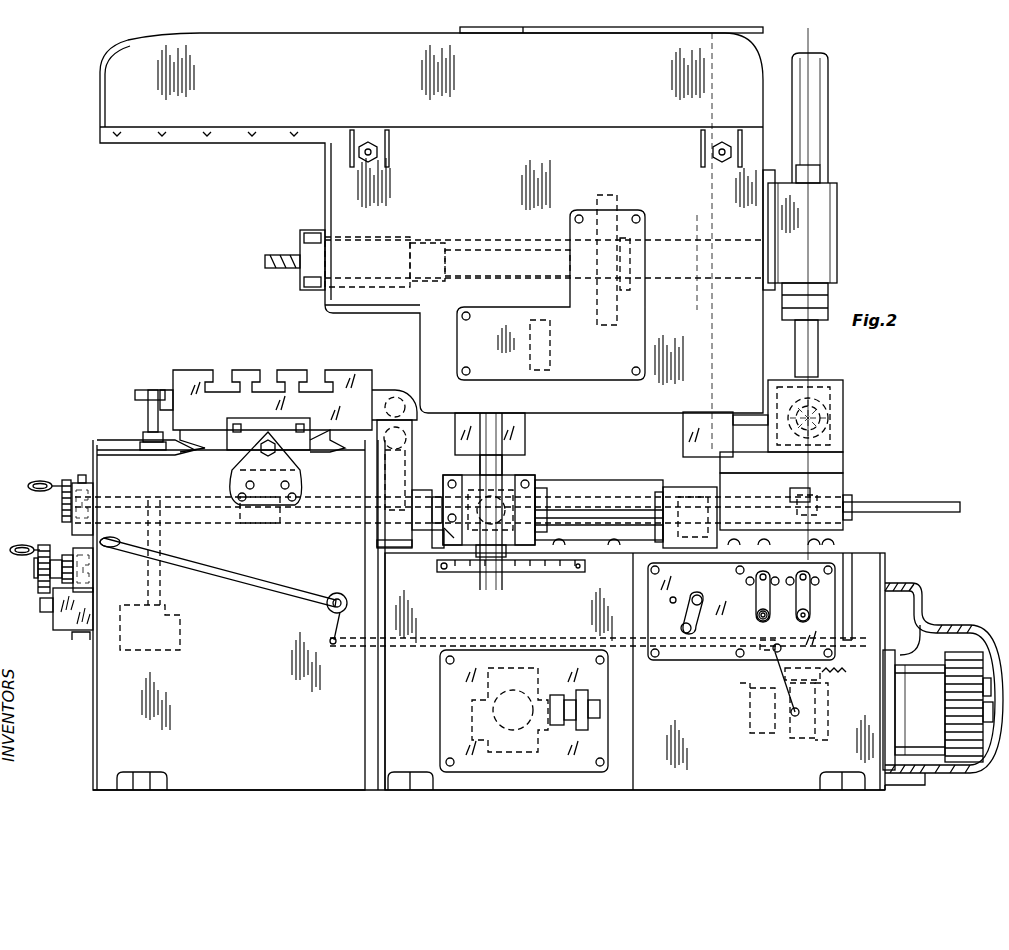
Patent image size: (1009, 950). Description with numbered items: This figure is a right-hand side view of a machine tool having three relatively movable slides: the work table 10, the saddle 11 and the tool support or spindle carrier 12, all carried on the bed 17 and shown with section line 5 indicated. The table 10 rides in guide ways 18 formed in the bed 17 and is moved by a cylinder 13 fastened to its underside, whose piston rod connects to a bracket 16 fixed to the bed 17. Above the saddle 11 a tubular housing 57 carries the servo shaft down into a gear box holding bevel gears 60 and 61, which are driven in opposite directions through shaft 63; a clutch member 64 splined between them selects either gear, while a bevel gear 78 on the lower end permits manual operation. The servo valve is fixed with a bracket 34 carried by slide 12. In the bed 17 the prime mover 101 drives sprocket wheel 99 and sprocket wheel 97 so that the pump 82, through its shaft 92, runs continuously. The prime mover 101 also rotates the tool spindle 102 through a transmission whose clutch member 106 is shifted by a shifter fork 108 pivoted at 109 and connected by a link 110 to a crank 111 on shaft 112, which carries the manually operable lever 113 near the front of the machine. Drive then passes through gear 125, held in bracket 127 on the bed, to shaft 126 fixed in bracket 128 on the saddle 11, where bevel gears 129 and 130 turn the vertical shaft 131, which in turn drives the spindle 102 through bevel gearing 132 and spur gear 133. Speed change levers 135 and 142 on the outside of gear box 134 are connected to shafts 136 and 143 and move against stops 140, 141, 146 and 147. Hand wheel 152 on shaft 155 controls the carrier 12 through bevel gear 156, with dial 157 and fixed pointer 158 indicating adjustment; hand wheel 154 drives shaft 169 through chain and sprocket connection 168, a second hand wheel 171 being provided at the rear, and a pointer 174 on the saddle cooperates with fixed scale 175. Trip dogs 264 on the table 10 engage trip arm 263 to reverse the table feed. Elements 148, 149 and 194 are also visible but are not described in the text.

The section line 5- 5 is at (812, 37).
The work table 10 is at (185, 372).
The saddle 11 is at (830, 466).
The tool support or spindle carrier 12 is at (335, 168).
The cylinder 13 is at (255, 420).
The bracket 16 is at (300, 487).
The bed 17 is at (100, 690).
The guide ways 18 is at (240, 450).
The bracket 34 is at (800, 205).
The tubular housing 57 is at (818, 355).
The bevel gear 60 is at (826, 405).
The bevel gear 61 is at (826, 432).
The shaft 63 is at (160, 583).
The clutch member 64 is at (826, 418).
The bevel gear 78 is at (798, 497).
The pump 82 is at (490, 758).
The shaft 92 is at (595, 715).
The sprocket wheel 97 is at (948, 765).
The sprocket wheel 99 is at (958, 652).
The prime mover 101 is at (908, 624).
The tool spindle 102 is at (312, 236).
The clutch member 106 is at (785, 732).
The shifter fork 108 is at (778, 702).
The pivot 109 is at (773, 676).
The link 110 is at (510, 635).
The crank 111 is at (330, 625).
The shaft 112 is at (340, 595).
The manually operable lever 113 is at (216, 578).
The gear 125 is at (690, 500).
The shaft 126 is at (585, 515).
The bracket 127 is at (718, 540).
The bracket 128 is at (510, 490).
The bevel gear 129 is at (515, 500).
The bevel gear 130 is at (500, 480).
The vertical shaft 131 is at (480, 462).
The bevel gearing 132 is at (518, 382).
The spur gear 133 is at (625, 328).
The gear box 134 is at (843, 610).
The lever 135 is at (757, 610).
The shaft 136 is at (762, 623).
The stop 140 is at (746, 582).
The stop 141 is at (776, 579).
The lever 142 is at (815, 590).
The shaft 143 is at (810, 617).
The stop 146 is at (790, 586).
The stop 147 is at (818, 578).
The switch lever 148 is at (688, 606).
The contact 149 is at (682, 635).
The hand wheel 152 is at (63, 480).
The hand wheel 154 is at (38, 548).
The shaft 155 is at (424, 500).
The bevel gear 156 is at (847, 497).
The dial 157 is at (82, 483).
The fixed pointer 158 is at (84, 475).
The chain and sprocket connection 168 is at (74, 550).
The shaft 169 is at (296, 520).
The second hand wheel 171 is at (436, 545).
The pointer 174 is at (456, 572).
The fixed scale 175 is at (540, 575).
The bracket 194 is at (65, 632).
The trip arm 263 is at (140, 408).
The trip dogs 264 is at (160, 380).